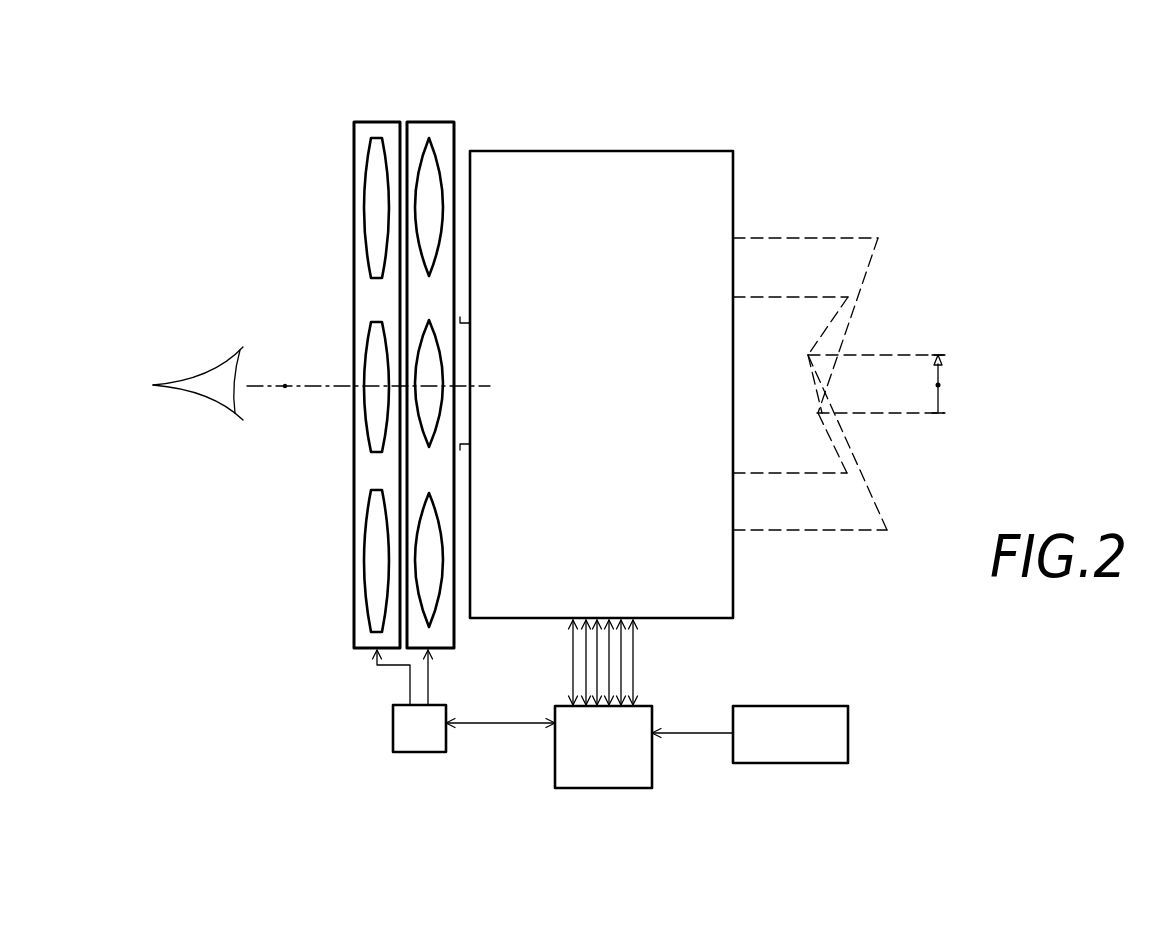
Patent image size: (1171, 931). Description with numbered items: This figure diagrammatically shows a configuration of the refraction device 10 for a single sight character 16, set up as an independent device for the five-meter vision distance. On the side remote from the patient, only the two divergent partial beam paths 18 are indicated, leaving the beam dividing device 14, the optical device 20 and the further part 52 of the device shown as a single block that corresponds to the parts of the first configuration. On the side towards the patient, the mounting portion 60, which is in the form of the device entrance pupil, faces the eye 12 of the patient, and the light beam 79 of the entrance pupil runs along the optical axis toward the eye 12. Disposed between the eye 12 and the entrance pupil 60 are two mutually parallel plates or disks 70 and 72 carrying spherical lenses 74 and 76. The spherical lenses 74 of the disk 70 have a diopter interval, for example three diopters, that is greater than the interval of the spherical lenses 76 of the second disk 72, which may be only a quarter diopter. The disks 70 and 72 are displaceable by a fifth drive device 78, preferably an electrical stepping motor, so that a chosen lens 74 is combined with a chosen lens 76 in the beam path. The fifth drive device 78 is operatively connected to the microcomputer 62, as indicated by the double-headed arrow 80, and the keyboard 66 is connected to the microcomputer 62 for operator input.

The refraction device 10 is at (868, 150).
The eye 12 is at (193, 400).
The beam dividing device 14 is at (601, 351).
The optical device 20 is at (601, 351).
The part of the device 52 is at (588, 197).
The sight character 16 is at (940, 385).
The partial beam paths 18 is at (797, 260).
The mounting portion 60 is at (466, 445).
The microcomputer 62 is at (587, 761).
The keyboard 66 is at (775, 751).
The disk 70 is at (434, 121).
The second disk 72 is at (378, 121).
The spherical lenses 74 is at (443, 199).
The spherical lenses 76 is at (363, 200).
The fifth drive device 78 is at (393, 721).
The light beam 79 is at (285, 388).
The double-headed arrow 80 is at (498, 726).